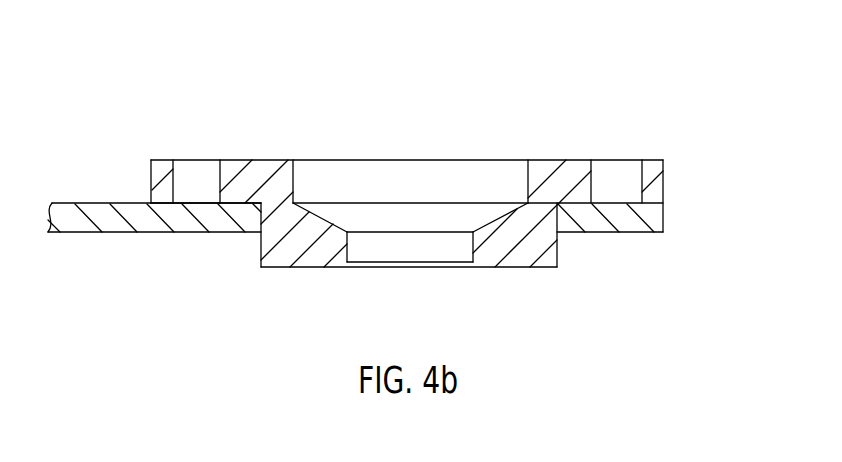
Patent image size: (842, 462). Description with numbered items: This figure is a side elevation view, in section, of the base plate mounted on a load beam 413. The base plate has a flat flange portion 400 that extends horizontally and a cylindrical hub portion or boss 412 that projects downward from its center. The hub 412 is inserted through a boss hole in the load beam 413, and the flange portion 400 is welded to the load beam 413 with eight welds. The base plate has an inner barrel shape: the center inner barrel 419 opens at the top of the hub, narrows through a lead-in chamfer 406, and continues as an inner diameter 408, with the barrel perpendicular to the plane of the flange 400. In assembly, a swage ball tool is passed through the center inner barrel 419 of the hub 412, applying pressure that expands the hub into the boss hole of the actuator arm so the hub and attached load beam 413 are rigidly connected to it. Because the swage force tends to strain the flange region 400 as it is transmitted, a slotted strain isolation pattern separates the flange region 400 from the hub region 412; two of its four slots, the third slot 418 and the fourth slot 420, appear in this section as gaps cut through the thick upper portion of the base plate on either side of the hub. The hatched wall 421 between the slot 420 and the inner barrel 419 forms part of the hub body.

The flat flange portion 400 is at (150, 170).
The lead-in chamfer 406 is at (339, 226).
The inner diameter 408 is at (350, 260).
The cylindrical hub portion 412 is at (282, 258).
The load beam 413 is at (75, 235).
The third slot 418 is at (633, 168).
The center inner barrel 419 is at (400, 175).
The fourth slot 420 is at (196, 166).
The hatched wall 421 is at (258, 163).